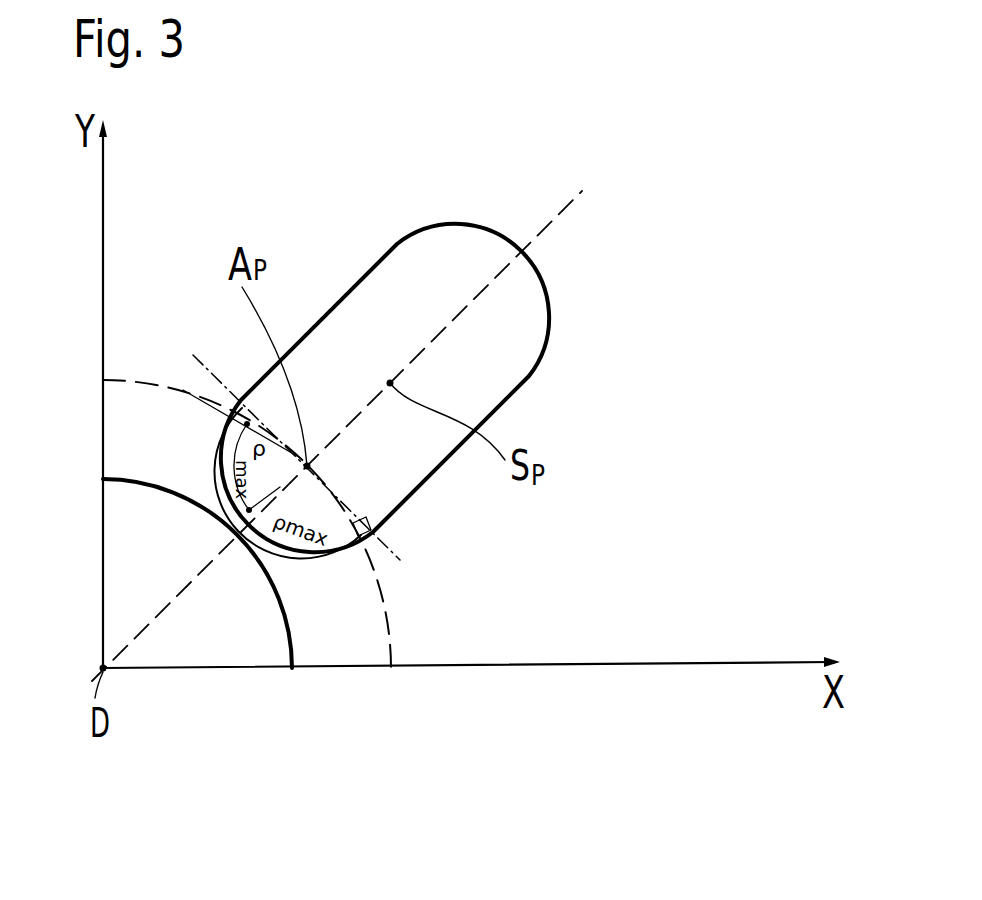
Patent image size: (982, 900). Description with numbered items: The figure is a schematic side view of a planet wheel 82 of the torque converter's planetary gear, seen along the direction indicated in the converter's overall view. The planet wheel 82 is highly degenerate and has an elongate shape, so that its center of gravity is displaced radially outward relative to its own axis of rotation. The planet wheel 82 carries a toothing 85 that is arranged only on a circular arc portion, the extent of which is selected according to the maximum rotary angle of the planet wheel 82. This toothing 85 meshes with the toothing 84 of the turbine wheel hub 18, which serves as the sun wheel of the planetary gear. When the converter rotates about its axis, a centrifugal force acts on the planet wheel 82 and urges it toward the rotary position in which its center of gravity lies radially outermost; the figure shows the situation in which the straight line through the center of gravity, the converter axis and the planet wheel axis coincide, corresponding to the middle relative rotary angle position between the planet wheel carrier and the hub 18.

The turbine wheel hub 18 is at (167, 638).
The planet wheel 82 is at (527, 322).
The toothing 84 is at (288, 628).
The toothing 85 is at (362, 540).